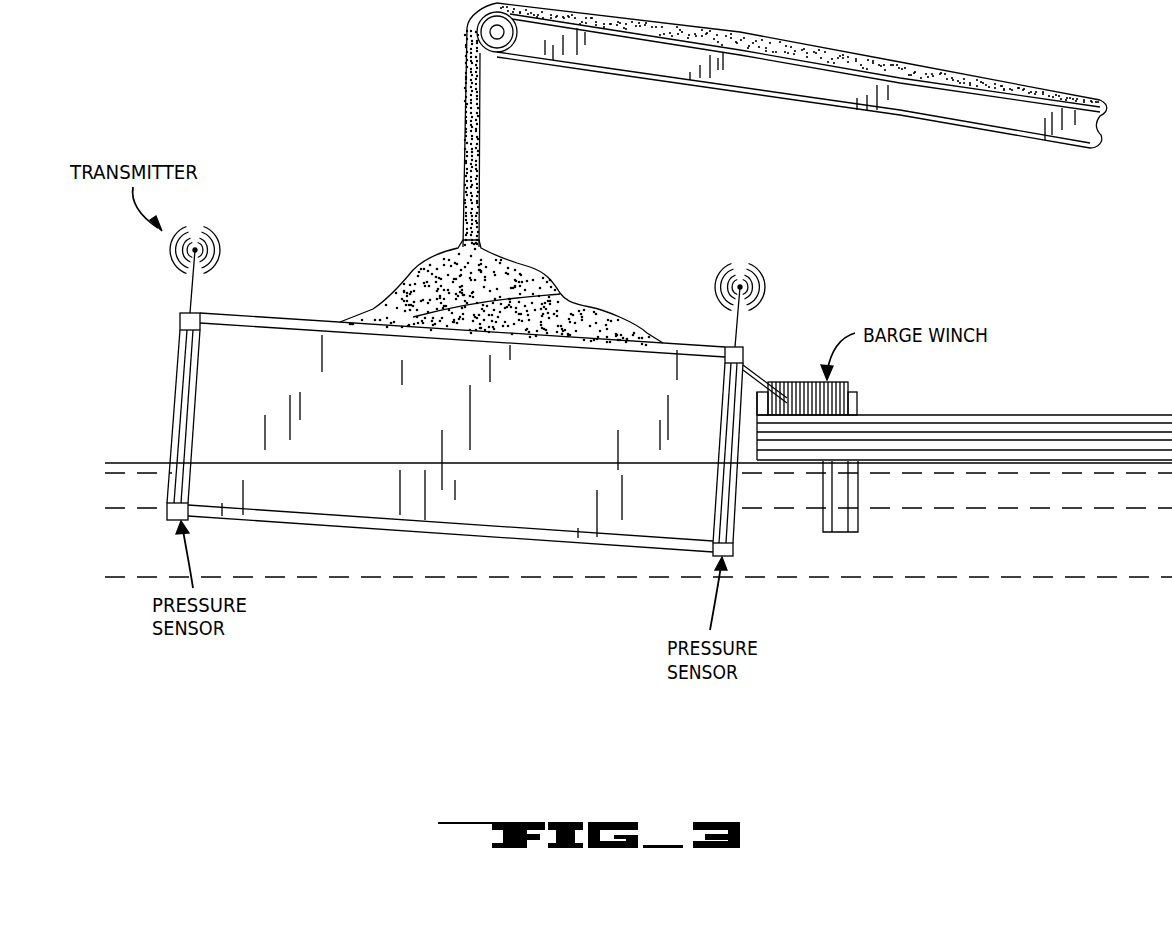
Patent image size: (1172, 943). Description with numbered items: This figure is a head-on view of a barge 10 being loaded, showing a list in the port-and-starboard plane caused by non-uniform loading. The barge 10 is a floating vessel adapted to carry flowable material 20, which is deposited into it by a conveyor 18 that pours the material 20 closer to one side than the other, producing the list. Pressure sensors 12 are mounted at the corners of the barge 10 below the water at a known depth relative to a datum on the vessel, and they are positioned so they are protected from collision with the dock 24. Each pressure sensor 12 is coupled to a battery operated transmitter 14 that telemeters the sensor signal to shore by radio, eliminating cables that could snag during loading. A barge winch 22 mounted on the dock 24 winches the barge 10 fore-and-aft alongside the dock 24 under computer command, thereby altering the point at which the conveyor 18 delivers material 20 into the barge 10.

The barge 10 is at (532, 518).
The pressure sensor 12 is at (168, 520).
The transmitter 14 is at (185, 312).
The conveyor 18 is at (780, 82).
The flowable material 20 is at (530, 268).
The barge winch 22 is at (850, 385).
The dock 24 is at (1082, 412).